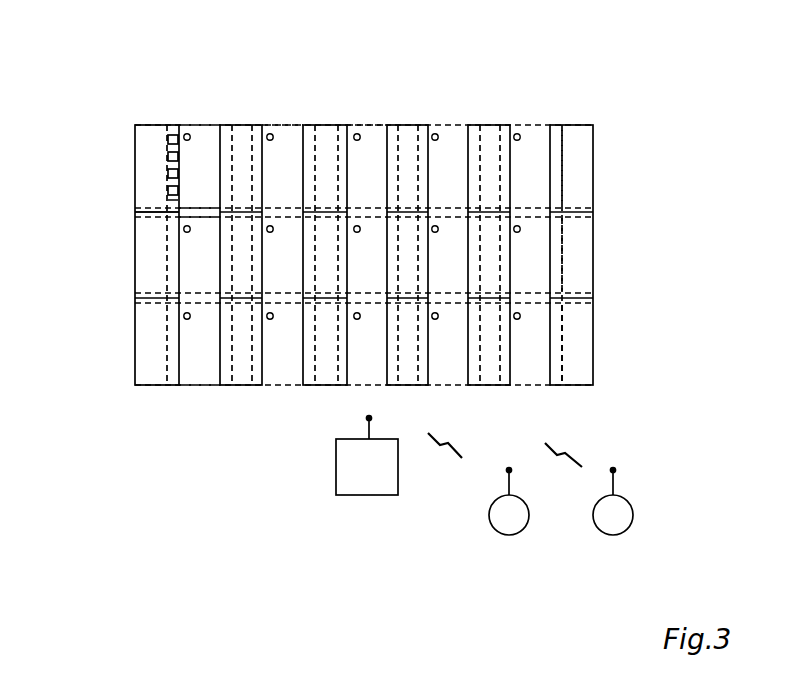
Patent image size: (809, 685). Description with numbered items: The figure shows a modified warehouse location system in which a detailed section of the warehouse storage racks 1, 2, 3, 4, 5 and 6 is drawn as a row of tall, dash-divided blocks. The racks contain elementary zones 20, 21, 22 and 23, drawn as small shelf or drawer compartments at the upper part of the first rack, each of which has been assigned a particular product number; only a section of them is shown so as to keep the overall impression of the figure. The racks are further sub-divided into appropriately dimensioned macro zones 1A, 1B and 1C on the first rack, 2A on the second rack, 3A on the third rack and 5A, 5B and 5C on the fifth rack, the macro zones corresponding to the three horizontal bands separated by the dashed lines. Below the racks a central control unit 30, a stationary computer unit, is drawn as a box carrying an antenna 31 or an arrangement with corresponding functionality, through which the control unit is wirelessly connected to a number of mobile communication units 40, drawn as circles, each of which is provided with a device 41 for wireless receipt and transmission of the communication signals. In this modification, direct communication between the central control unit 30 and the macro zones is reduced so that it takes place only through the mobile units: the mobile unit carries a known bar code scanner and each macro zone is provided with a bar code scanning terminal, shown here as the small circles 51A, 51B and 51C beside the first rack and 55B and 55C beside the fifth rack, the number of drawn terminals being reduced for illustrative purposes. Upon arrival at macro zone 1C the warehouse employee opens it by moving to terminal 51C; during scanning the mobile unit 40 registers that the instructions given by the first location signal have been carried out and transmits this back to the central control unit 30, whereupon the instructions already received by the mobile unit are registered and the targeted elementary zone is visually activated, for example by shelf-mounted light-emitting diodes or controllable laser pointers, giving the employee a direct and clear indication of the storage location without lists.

The storage rack 1 is at (147, 123).
The macro zone 1A is at (203, 126).
The macro zone 1B is at (167, 252).
The macro zone 1C is at (193, 383).
The storage rack 2 is at (248, 123).
The macro zone 2A is at (285, 125).
The storage rack 3 is at (328, 125).
The macro zone 3A is at (370, 125).
The storage rack 4 is at (420, 123).
The storage rack 5 is at (500, 122).
The macro zone 5A is at (562, 178).
The macro zone 5B is at (562, 260).
The macro zone 5C is at (562, 340).
The storage rack 6 is at (590, 122).
The elementary zone 20 is at (168, 138).
The elementary zone 21 is at (168, 158).
The elementary zone 22 is at (168, 176).
The elementary zone 23 is at (167, 208).
The central control unit 30 is at (336, 462).
The antenna 31 is at (363, 427).
The mobile communication unit 40 is at (505, 535).
The antenna of transponder 41 is at (507, 480).
The hole in row A 51A is at (188, 131).
The bar code scanning terminal 51B is at (188, 234).
The bar code scanning terminal 51C is at (183, 316).
The bar code scanning terminal 55B is at (521, 229).
The bar code scanning terminal 55C is at (520, 318).